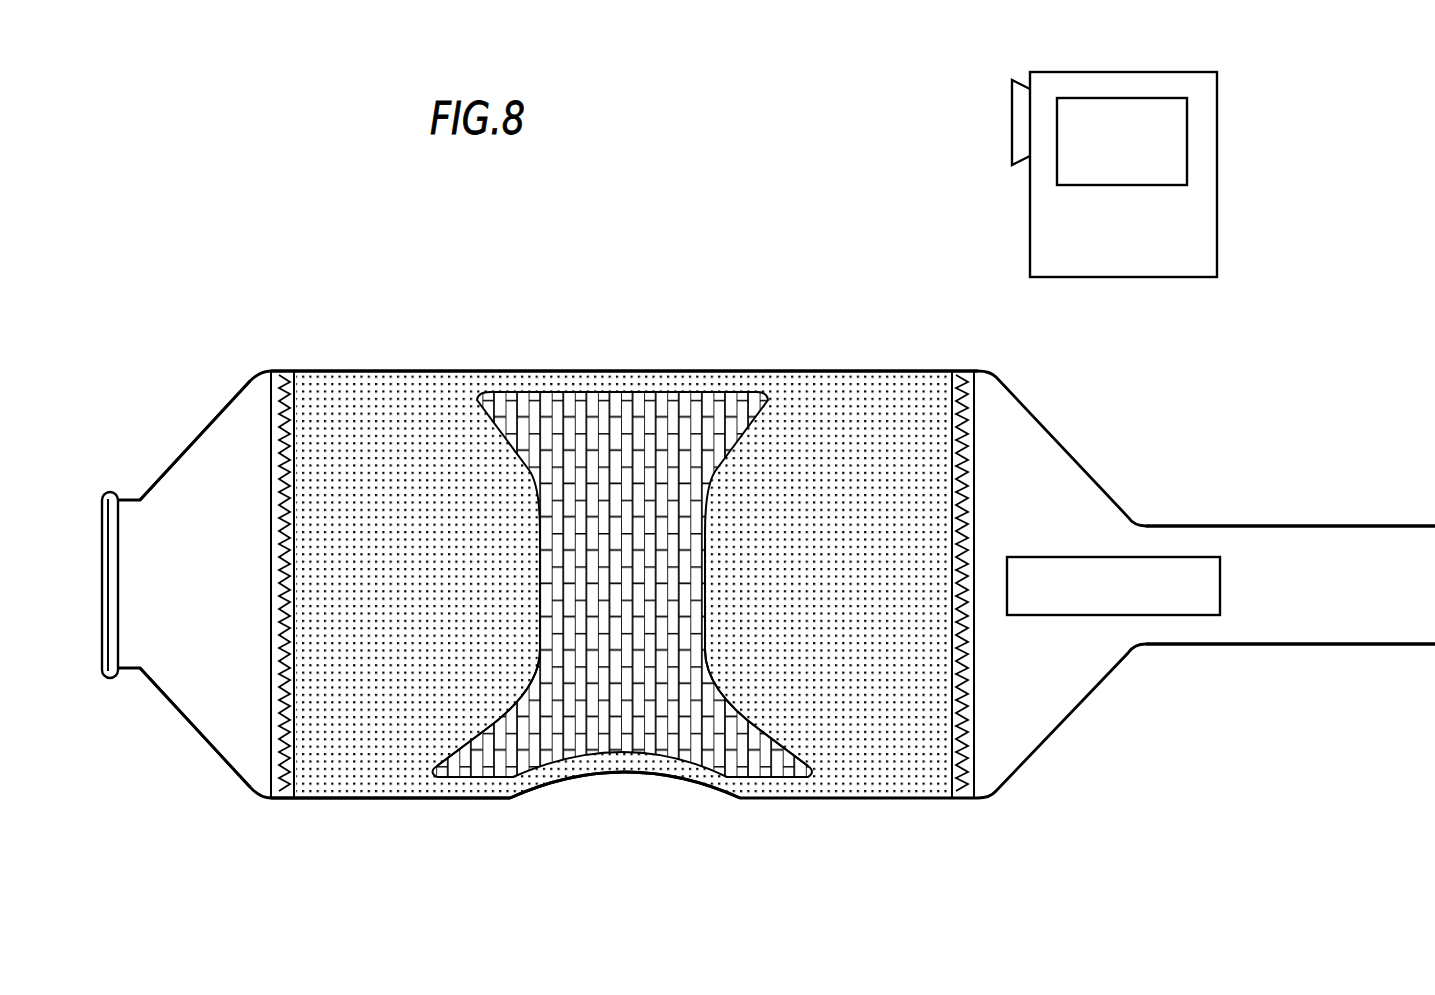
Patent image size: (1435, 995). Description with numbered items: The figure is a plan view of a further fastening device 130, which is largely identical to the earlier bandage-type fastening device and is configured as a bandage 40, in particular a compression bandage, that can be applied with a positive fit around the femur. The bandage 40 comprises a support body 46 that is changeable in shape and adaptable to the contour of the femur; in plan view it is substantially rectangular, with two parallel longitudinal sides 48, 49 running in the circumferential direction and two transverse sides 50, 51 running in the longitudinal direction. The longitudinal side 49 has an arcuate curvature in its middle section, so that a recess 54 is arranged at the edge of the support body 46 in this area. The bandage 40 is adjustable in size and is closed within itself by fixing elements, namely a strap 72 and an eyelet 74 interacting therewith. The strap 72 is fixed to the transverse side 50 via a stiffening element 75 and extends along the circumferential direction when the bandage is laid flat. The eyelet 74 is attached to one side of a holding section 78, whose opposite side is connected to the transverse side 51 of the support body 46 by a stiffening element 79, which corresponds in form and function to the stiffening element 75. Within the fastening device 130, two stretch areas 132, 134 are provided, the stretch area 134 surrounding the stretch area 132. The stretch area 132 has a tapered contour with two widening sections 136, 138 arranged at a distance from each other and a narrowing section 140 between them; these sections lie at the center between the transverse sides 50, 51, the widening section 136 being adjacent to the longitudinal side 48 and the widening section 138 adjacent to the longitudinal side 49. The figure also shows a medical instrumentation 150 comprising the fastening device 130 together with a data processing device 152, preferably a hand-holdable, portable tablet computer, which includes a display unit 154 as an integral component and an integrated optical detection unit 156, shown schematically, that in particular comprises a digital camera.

The bandage 40 is at (1100, 446).
The support body 46 is at (886, 402).
The longitudinal side 48 is at (428, 370).
The longitudinal side 49 is at (383, 799).
The transverse side 50 is at (952, 754).
The transverse side 51 is at (293, 735).
The recess 54 is at (624, 781).
The strap 72 is at (1348, 557).
The eyelet 74 is at (104, 494).
The stiffening element 75 is at (963, 788).
The holding section 78 is at (203, 480).
The stiffening element 79 is at (283, 799).
The fastening device 130 is at (631, 280).
The stretch area 132 is at (557, 720).
The stretch area 134 is at (887, 741).
The widening section 136 is at (648, 437).
The widening section 138 is at (692, 722).
The narrowing section 140 is at (637, 580).
The medical instrumentation 150 is at (1155, 148).
The data processing device 152 is at (1245, 206).
The display unit 154 is at (1146, 153).
The optical detection unit 156 is at (1016, 109).